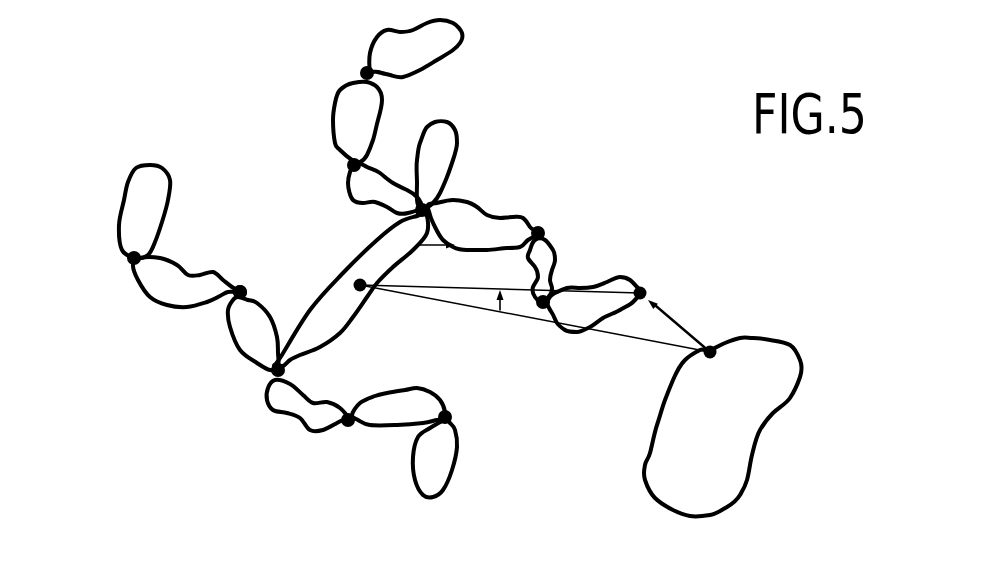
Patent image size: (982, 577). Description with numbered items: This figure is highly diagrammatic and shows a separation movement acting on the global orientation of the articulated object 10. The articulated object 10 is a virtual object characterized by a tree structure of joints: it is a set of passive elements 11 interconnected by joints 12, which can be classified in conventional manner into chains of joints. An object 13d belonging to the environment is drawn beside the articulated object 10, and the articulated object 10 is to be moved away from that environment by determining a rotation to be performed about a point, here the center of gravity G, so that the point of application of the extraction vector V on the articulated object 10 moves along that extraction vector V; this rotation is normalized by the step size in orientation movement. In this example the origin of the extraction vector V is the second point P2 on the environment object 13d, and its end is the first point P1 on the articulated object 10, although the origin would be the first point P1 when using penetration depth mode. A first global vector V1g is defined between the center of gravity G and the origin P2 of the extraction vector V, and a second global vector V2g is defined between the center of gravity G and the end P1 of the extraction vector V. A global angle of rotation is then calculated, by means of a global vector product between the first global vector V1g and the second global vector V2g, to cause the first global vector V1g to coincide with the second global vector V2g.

The articulated object 10 is at (156, 232).
The elements 11 is at (442, 143).
The joints 12 is at (235, 302).
The object belonging to the environment 13d is at (673, 442).
The center of gravity G is at (363, 288).
The first point P1 is at (645, 290).
The second point P2 is at (712, 357).
The extraction vector V is at (708, 297).
The first global vector V1g is at (650, 343).
The second global vector V2g is at (420, 247).